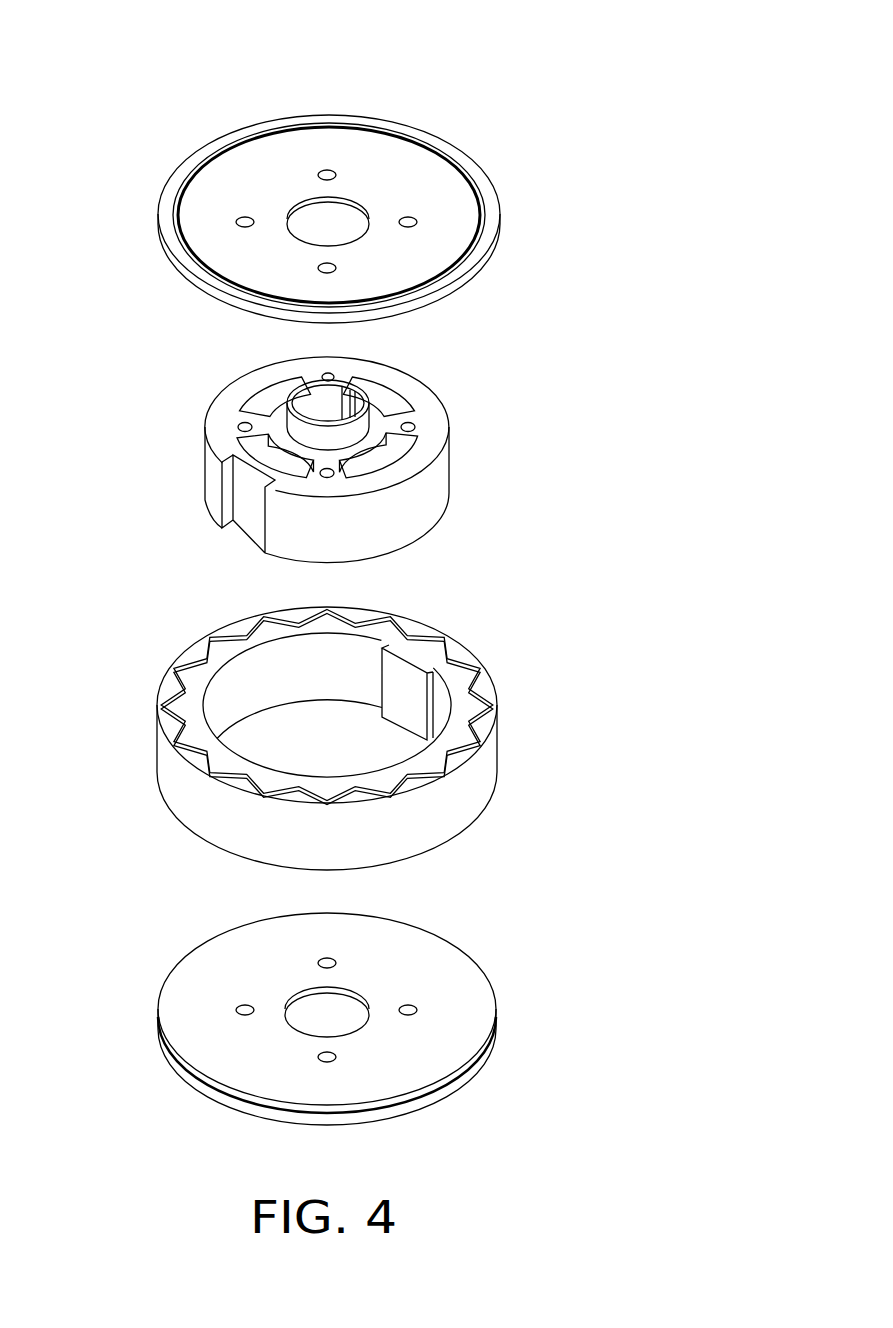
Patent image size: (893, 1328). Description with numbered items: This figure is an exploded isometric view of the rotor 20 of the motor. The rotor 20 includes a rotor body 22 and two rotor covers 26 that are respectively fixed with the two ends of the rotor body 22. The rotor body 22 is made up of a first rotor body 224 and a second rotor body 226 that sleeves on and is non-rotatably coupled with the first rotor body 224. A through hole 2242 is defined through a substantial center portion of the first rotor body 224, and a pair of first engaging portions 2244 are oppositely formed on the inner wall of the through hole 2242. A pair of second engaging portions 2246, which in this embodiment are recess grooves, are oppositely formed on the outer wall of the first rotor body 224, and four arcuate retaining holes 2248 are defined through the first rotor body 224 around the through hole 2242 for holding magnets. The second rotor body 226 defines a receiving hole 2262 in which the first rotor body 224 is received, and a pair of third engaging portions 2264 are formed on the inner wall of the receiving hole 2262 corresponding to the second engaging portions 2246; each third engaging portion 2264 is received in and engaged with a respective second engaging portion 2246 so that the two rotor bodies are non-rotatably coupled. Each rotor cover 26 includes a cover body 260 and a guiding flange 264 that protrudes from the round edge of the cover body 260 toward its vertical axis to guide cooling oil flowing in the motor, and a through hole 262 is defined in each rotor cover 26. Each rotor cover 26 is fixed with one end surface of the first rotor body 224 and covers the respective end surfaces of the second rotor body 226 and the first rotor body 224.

The rotor 20 is at (347, 44).
The rotor body 22 is at (533, 533).
The rotor cover 26 is at (313, 213).
The cover body 260 is at (445, 255).
The through hole 262 is at (335, 222).
The guiding flange 264 is at (170, 190).
The first rotor body 224 is at (321, 446).
The through hole 2242 is at (332, 397).
The first engaging portion 2244 is at (345, 408).
The second engaging portion 2246 is at (245, 492).
The arcuate retaining hole 2248 is at (263, 403).
The second rotor body 226 is at (347, 726).
The receiving hole 2262 is at (252, 680).
The third engaging portion 2264 is at (402, 678).